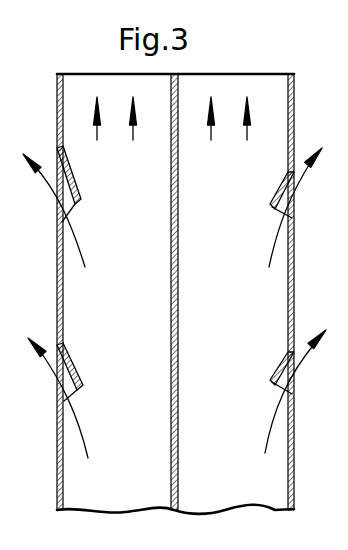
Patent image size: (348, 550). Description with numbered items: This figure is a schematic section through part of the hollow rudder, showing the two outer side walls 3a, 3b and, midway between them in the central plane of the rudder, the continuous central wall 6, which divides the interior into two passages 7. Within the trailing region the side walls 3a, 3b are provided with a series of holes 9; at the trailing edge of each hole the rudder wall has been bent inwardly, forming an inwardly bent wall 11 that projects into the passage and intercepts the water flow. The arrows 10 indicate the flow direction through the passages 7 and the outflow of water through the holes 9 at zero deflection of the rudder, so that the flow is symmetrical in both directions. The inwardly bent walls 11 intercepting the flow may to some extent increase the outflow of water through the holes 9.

The outer side wall 3a is at (57, 283).
The outer side wall 3b is at (294, 283).
The central wall 6 is at (178, 457).
The passage 7 is at (127, 305).
The hole 9 is at (63, 193).
The arrow 10 is at (78, 243).
The inwardly bent wall 11 is at (274, 193).